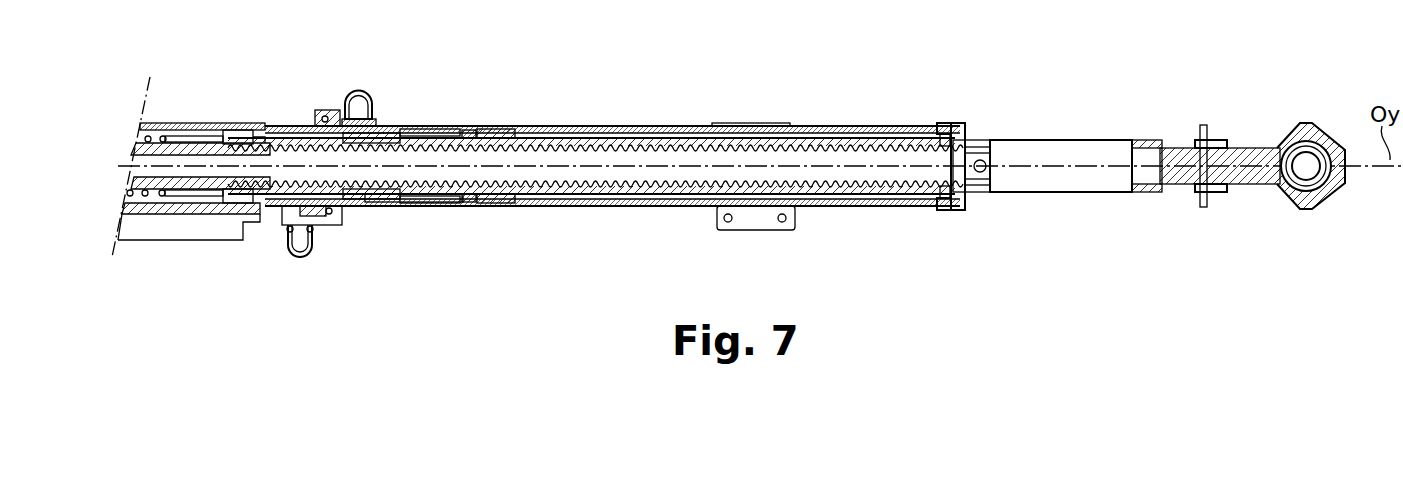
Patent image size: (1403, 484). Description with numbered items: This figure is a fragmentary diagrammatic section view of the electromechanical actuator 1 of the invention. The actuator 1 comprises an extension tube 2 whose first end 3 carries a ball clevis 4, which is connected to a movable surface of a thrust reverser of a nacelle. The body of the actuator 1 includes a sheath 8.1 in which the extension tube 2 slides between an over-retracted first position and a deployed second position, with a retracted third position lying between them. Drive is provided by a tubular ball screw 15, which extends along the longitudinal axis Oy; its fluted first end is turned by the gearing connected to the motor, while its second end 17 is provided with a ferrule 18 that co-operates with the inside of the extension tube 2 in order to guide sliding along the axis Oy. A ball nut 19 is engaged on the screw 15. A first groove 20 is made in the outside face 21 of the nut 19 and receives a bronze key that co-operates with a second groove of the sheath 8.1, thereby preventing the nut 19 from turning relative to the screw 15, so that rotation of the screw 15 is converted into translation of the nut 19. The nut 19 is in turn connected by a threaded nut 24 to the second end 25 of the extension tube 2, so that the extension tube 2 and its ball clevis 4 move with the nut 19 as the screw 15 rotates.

The electromechanical actuator 1 is at (1089, 72).
The extension tube 2 is at (1025, 138).
The first end 3 is at (1226, 138).
The ball clevis 4 is at (1318, 123).
The sheath 8.1 is at (593, 126).
The tubular ball screw 15 is at (670, 126).
The second end 17 is at (945, 122).
The ferrule 18 is at (986, 138).
The ball nut 19 is at (427, 126).
The first groove 20 is at (406, 206).
The outside face 21 is at (397, 126).
The threaded nut 24 is at (512, 126).
The second end 25 is at (498, 126).